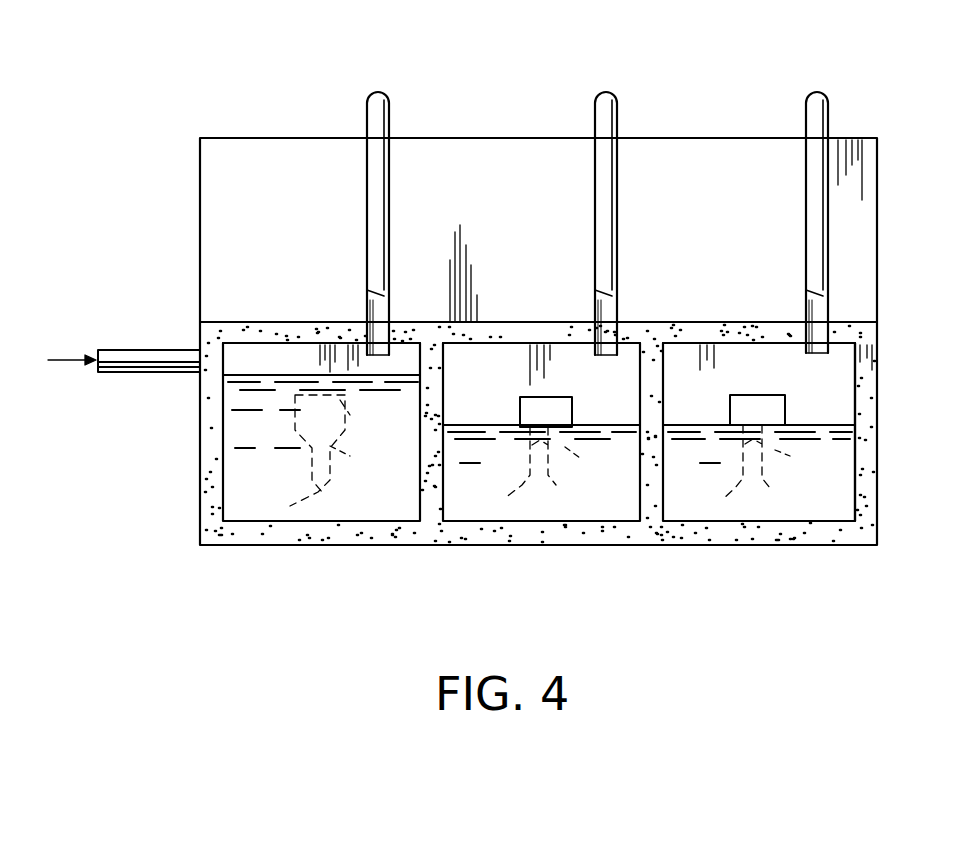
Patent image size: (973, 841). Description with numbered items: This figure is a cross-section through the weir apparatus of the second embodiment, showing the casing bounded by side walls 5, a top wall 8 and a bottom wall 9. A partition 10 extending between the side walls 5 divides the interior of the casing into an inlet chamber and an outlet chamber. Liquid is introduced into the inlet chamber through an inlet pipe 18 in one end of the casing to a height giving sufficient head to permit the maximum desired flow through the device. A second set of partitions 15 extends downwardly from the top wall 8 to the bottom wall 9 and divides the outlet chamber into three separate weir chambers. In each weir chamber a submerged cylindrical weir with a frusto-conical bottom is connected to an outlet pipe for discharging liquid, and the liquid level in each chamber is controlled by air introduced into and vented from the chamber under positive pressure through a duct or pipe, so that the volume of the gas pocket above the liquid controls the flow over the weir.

The side walls 5 is at (205, 420).
The top wall 8 is at (718, 324).
The bottom wall 9 is at (655, 540).
The partition 10 is at (622, 400).
The second set of partitions 15 is at (420, 498).
The inlet pipe 18 is at (130, 350).